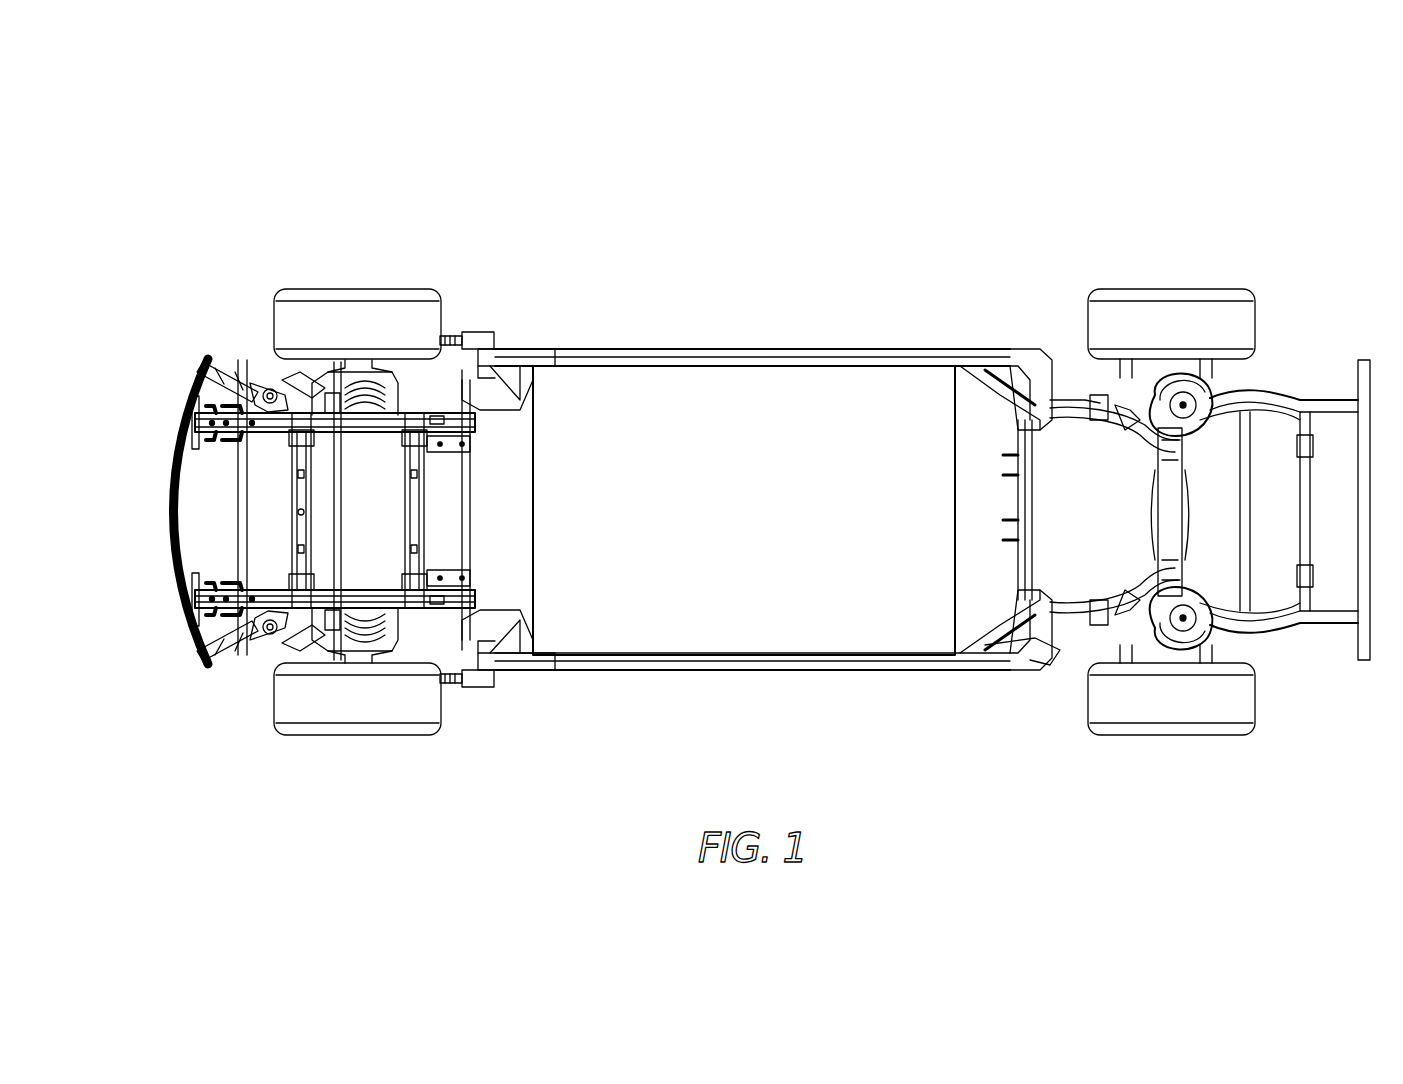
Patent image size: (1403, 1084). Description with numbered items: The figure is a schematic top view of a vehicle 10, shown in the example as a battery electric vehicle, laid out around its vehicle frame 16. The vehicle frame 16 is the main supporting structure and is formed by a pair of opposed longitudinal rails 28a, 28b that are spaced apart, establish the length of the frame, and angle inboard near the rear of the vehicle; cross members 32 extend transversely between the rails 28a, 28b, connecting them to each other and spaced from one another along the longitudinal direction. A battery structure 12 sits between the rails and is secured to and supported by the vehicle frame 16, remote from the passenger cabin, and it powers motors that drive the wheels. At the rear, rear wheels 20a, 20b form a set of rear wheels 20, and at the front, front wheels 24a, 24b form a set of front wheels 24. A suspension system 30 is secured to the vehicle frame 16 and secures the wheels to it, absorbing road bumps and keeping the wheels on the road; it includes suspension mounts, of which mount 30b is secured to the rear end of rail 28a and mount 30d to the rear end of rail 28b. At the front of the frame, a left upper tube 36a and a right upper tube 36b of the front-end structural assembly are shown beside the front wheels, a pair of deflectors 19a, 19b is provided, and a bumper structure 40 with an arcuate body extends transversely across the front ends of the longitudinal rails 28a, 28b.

The vehicle 10 is at (1045, 185).
The battery structure 12 is at (648, 410).
The vehicle frame 16 is at (897, 302).
The deflector 19a is at (262, 382).
The deflector 19b is at (240, 640).
The set of rear wheels 20 is at (1243, 750).
The rear wheel 20a is at (1165, 305).
The rear wheel 20b is at (1168, 705).
The set of front wheels 24 is at (455, 728).
The front wheel 24a is at (404, 312).
The front wheel 24b is at (360, 705).
The longitudinal rail 28a is at (752, 360).
The longitudinal rail 28b is at (805, 662).
The suspension system 30 is at (327, 368).
The suspension mount 30b is at (1205, 400).
The suspension mount 30d is at (1145, 640).
The cross members 32 is at (300, 465).
The left upper tube 36a is at (470, 330).
The right upper tube 36b is at (485, 700).
The bumper structure 40 is at (160, 495).